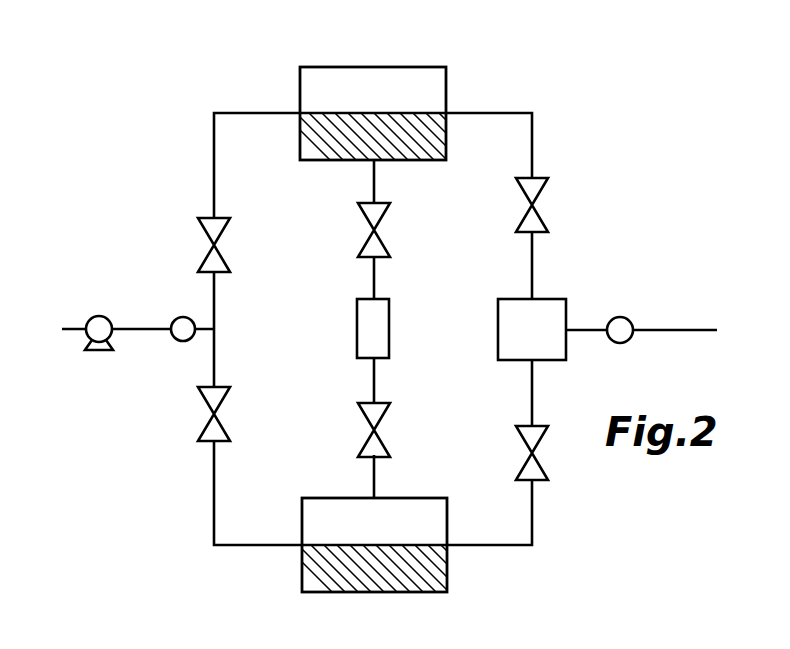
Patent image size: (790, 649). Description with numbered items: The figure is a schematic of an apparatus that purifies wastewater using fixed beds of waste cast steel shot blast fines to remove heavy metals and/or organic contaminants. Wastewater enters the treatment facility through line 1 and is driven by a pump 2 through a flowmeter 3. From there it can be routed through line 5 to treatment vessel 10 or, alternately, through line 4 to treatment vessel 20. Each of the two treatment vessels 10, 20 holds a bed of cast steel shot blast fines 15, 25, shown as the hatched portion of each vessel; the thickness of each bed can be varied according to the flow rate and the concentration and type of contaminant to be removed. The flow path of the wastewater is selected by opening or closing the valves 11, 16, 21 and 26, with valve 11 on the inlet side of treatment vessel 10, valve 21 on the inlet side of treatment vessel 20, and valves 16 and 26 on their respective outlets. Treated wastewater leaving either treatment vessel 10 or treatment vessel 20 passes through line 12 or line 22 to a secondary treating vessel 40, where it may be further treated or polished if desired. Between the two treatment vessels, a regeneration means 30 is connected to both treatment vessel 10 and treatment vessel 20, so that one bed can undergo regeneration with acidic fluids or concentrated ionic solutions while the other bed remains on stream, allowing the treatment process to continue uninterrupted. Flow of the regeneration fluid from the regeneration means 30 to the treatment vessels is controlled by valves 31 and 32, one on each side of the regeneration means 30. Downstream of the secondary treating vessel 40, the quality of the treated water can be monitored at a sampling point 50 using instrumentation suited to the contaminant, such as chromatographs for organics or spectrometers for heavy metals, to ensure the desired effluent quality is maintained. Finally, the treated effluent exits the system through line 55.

The line 1 is at (72, 329).
The pump 2 is at (100, 316).
The flowmeter 3 is at (183, 341).
The line 4 is at (214, 478).
The line 5 is at (214, 181).
The treatment vessel 10 is at (403, 99).
The valve 11 is at (212, 245).
The line 12 is at (460, 113).
The bed of cast steel shot blast fines 15 is at (447, 133).
The valve 16 is at (530, 205).
The treatment vessel 20 is at (403, 566).
The valve 21 is at (212, 414).
The line 22 is at (447, 548).
The bed of cast steel shot blast fines 25 is at (447, 583).
The valve 26 is at (530, 453).
The regeneration means 30 is at (357, 326).
The valve 31 is at (372, 230).
The valve 32 is at (372, 430).
The secondary treating vessel 40 is at (540, 299).
The sampling point 50 is at (625, 317).
The line 55 is at (680, 330).